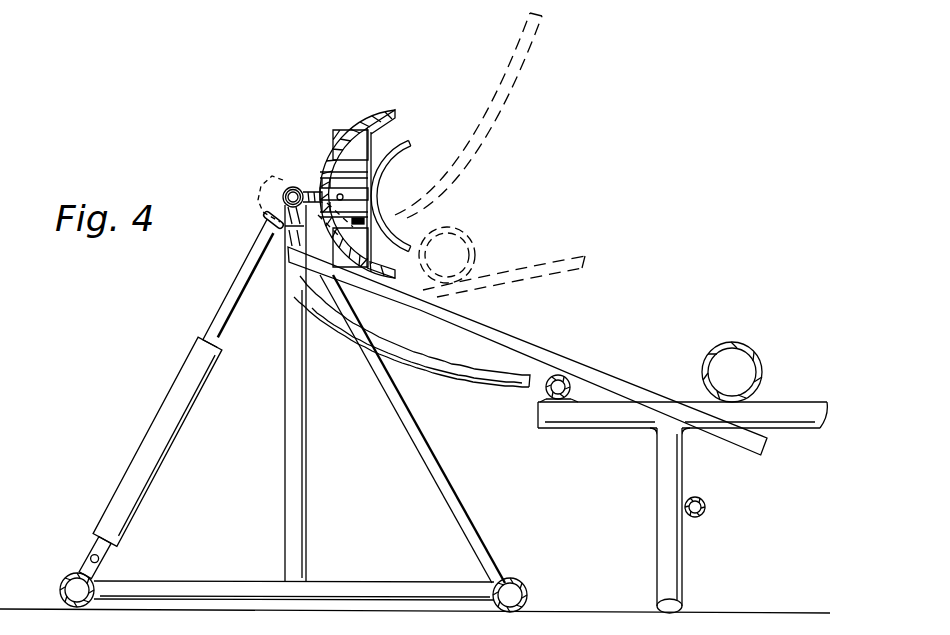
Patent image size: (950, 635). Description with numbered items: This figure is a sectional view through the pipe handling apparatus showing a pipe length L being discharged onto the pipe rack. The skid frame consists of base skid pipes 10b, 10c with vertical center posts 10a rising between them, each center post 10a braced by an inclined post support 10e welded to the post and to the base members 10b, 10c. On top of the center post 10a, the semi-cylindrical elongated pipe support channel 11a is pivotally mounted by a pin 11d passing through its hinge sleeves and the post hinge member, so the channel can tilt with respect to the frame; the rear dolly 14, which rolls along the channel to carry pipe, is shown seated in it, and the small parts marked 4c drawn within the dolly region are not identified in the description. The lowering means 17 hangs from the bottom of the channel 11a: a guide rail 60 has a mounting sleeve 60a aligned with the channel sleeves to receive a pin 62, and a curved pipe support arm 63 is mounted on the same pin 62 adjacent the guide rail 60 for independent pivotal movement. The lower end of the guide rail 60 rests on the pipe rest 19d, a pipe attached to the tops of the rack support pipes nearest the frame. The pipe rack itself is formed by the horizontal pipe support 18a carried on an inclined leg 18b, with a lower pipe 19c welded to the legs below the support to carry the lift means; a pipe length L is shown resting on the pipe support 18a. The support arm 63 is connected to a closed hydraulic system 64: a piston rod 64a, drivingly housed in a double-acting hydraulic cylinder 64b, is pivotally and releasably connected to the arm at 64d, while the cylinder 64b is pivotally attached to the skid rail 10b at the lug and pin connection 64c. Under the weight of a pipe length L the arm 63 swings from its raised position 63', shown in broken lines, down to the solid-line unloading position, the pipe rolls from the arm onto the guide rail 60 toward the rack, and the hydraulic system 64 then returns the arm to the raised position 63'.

The center post 10a is at (302, 426).
The skid pipe 10b is at (66, 583).
The skid pipe 10c is at (528, 592).
The inclined post support 10e is at (433, 481).
The elongated pipe support channel 11a is at (392, 112).
The pin 11d is at (289, 187).
The rear dolly 14 is at (411, 142).
The lowering means 17 is at (257, 191).
The clamp blocks 4c is at (350, 198).
The pipe support 18a is at (792, 400).
The inclined leg 18b is at (683, 551).
The pipe 19c is at (706, 508).
The pipe rest 19d is at (546, 399).
The guide rail 60 is at (532, 357).
The mounting sleeve 60a is at (284, 193).
The pin 62 is at (297, 188).
The curved pipe support arm 63 is at (412, 341).
The raised position of support arm 63' is at (451, 155).
The closed hydraulic system 64 is at (180, 385).
The piston rod 64a is at (238, 292).
The hydraulic cylinder 64b is at (152, 440).
The lug and pin connection 64c is at (108, 563).
The pivotal releasable connection 64d is at (264, 216).
The pipe length L is at (728, 343).